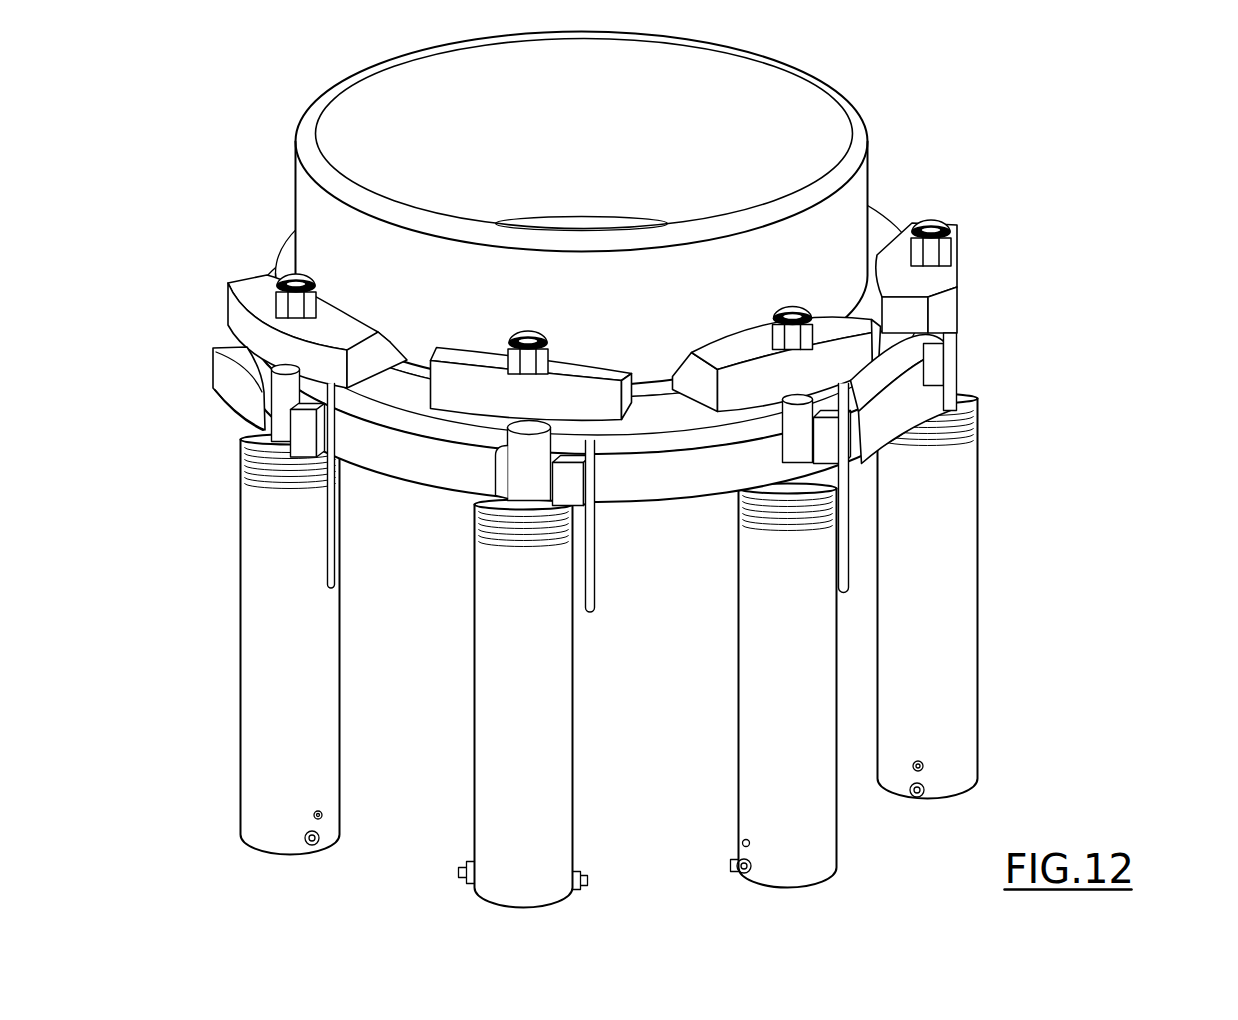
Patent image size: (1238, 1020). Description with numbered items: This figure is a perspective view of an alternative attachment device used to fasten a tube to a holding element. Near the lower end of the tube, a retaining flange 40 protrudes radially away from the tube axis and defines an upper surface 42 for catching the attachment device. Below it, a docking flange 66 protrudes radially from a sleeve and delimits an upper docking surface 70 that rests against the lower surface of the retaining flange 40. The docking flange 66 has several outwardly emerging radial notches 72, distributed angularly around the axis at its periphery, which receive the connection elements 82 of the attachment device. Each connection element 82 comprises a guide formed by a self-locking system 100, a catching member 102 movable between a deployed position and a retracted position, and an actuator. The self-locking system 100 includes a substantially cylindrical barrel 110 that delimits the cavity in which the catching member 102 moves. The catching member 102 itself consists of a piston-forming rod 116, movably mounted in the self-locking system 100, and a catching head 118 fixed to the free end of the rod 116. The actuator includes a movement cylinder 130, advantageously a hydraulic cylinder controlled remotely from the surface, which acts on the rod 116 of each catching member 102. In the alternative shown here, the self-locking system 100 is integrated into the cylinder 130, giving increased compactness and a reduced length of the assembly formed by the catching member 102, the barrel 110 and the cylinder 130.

The retaining flange 40 is at (880, 100).
The upper surface 42 is at (670, 394).
The docking flange 66 is at (398, 406).
The upper docking surface 70 is at (173, 419).
The radial notches 72 is at (240, 418).
The connection elements 82 is at (674, 651).
The self-locking system 100 is at (1011, 596).
The catching member 102 is at (966, 286).
The barrel 110 is at (962, 570).
The rod 116 is at (948, 338).
The catching head 118 is at (922, 288).
The movement cylinder 130 is at (1011, 596).